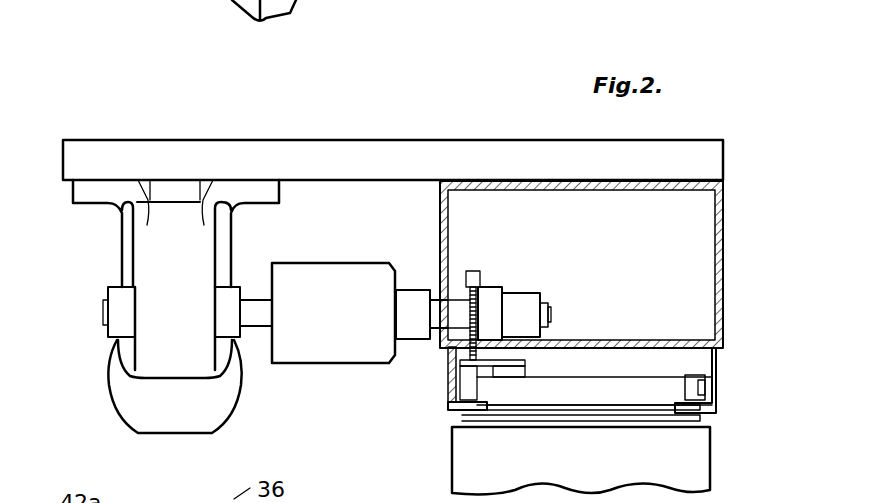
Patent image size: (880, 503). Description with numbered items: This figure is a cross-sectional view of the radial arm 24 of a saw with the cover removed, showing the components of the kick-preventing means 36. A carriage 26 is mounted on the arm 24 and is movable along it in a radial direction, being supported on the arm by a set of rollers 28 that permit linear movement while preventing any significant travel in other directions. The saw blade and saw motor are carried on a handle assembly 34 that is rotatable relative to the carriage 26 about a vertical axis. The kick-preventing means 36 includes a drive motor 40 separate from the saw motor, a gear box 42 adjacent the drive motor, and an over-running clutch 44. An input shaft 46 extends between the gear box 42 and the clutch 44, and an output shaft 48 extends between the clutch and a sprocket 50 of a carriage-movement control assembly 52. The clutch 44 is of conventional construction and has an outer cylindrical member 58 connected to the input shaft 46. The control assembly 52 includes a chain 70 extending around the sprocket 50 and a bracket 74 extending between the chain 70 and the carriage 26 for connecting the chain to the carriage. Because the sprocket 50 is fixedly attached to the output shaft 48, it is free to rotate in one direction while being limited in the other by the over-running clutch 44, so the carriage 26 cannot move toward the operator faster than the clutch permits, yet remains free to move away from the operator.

The arm 24 is at (722, 220).
The carriage 26 is at (601, 389).
The rollers 28 is at (450, 400).
The handle assembly 34 is at (712, 460).
The kick-preventing means 36 is at (366, 138).
The drive motor 40 is at (132, 404).
The gear box 42 is at (138, 247).
The over-running clutch 44 is at (333, 306).
The input shaft 46 is at (258, 305).
The output shaft 48 is at (437, 322).
The sprocket 50 is at (490, 290).
The carriage-movement control assembly 52 is at (524, 276).
The outer cylindrical member 58 is at (340, 355).
The chain 70 is at (466, 270).
The bracket 74 is at (490, 351).